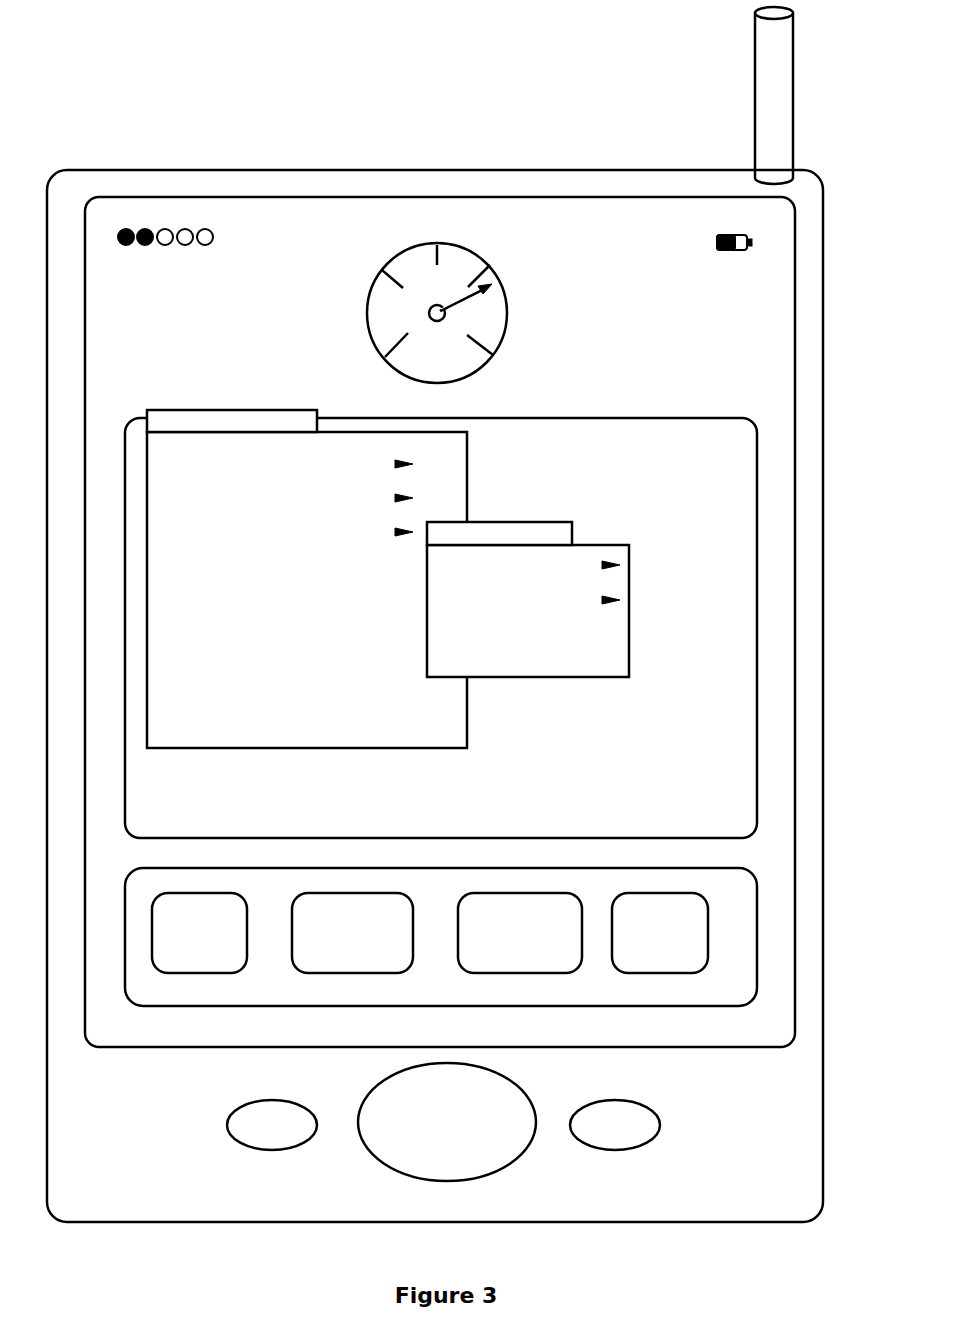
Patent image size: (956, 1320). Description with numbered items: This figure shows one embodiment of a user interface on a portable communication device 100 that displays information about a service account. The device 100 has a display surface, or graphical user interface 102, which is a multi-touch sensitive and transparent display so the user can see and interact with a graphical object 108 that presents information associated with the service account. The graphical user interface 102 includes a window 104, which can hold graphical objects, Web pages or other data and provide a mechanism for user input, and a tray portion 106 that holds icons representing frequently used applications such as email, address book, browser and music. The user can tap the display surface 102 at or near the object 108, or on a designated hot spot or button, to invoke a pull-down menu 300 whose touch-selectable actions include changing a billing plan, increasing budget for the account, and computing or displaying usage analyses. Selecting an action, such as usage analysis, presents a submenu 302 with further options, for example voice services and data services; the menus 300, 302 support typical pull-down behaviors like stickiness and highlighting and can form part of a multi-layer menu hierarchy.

The portable communication device 100 is at (456, 107).
The display surface/graphical user interface 102 is at (772, 1184).
The window 104 is at (682, 824).
The tray portion 106 is at (742, 1039).
The graphical object 108 is at (508, 303).
The pull-down menu 300 is at (222, 410).
The submenu 302 is at (495, 522).